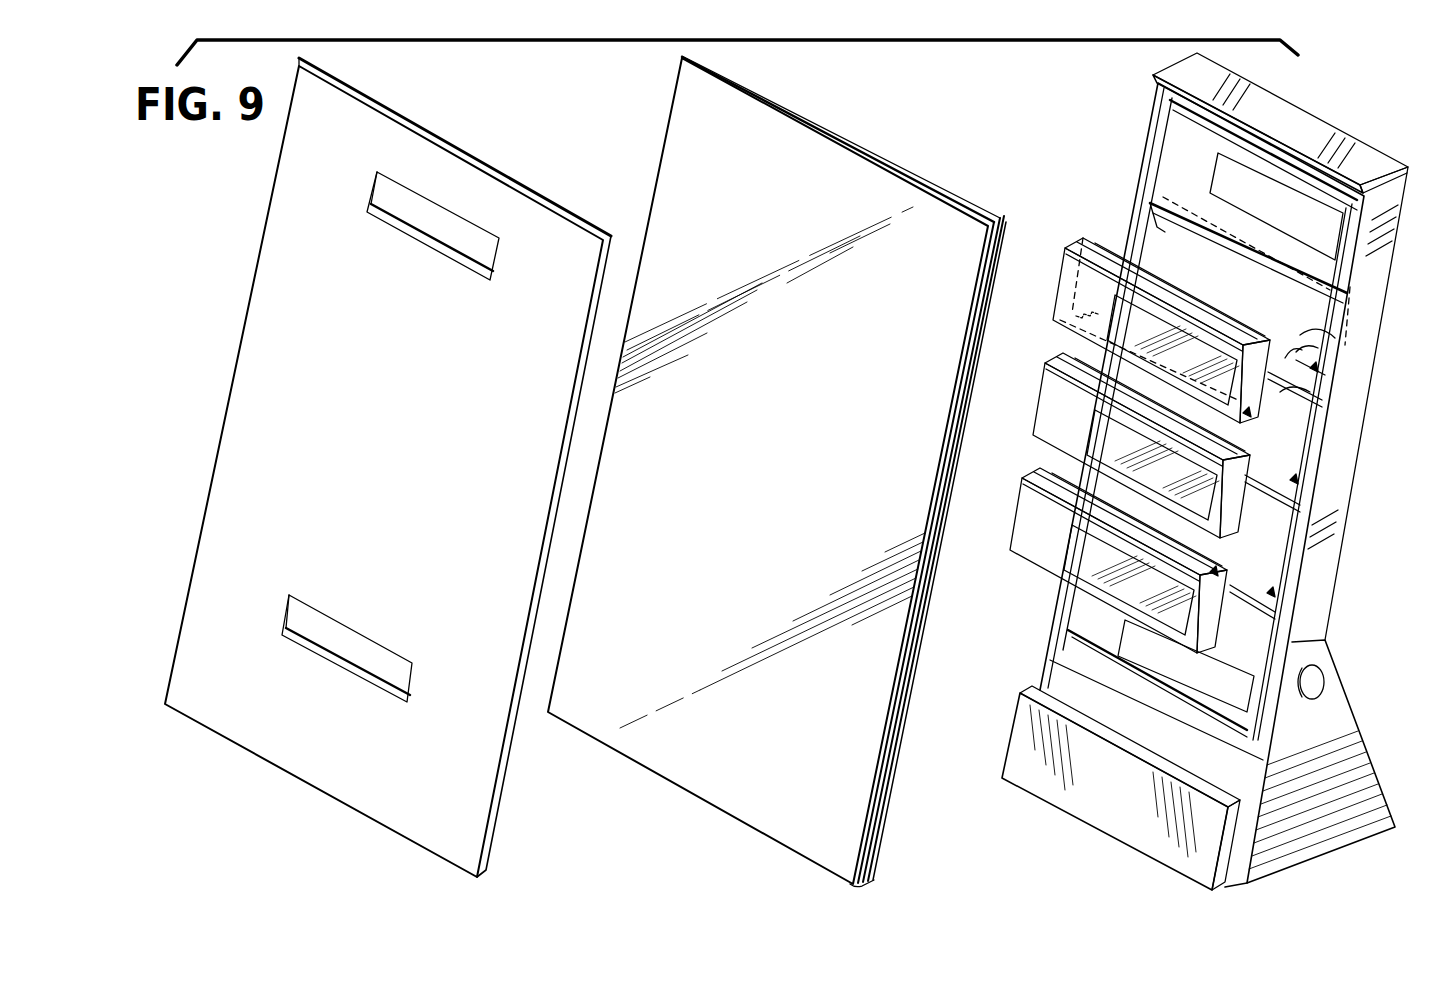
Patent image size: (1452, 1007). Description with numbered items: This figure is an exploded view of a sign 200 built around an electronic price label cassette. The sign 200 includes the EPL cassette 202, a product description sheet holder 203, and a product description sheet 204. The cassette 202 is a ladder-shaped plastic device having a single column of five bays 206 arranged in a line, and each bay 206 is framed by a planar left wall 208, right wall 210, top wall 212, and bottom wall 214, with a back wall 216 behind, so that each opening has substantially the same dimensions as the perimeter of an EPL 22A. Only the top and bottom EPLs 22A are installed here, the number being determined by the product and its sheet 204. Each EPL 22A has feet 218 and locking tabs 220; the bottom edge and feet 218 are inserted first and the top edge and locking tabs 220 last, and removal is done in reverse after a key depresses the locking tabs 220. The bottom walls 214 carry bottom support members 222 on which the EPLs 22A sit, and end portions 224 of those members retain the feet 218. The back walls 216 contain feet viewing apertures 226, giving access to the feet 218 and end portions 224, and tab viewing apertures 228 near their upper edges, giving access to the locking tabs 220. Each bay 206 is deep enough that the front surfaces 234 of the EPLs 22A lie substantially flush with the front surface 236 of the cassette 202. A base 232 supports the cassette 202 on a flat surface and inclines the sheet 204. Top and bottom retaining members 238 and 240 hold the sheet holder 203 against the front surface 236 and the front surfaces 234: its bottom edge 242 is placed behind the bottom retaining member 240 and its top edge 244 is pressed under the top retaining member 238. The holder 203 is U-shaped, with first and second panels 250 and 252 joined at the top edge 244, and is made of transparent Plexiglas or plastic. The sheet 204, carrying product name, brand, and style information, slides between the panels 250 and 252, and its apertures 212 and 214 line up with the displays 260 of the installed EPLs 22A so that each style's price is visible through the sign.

The sign 200 is at (236, 230).
The EPL cassette 202 is at (1347, 548).
The product description sheet holder 203 is at (825, 108).
The product description sheet 204 is at (503, 170).
The bay 206 is at (1293, 284).
The left wall 208 is at (1150, 233).
The right wall 210 is at (1338, 320).
The top wall 212 is at (368, 186).
The bottom wall 214 is at (284, 618).
The back wall 216 is at (1245, 295).
The feet 218 is at (1064, 327).
The locking tabs 220 is at (1076, 244).
The bottom support members 222 is at (1300, 350).
The end portions 224 is at (1298, 390).
The feet viewing apertures 226 is at (1312, 370).
The tab viewing apertures 228 is at (1142, 197).
The base 232 is at (1343, 733).
The front surfaces 234 is at (1176, 136).
The front surface 236 is at (1158, 100).
The top retaining member 238 is at (1360, 145).
The bottom retaining member 240 is at (1020, 750).
The bottom edge 242 is at (858, 887).
The top edge 244 is at (890, 168).
The first panel 250 is at (863, 805).
The second panel 252 is at (880, 827).
The displays 260 is at (1248, 178).
The EPL 22A is at (1170, 169).